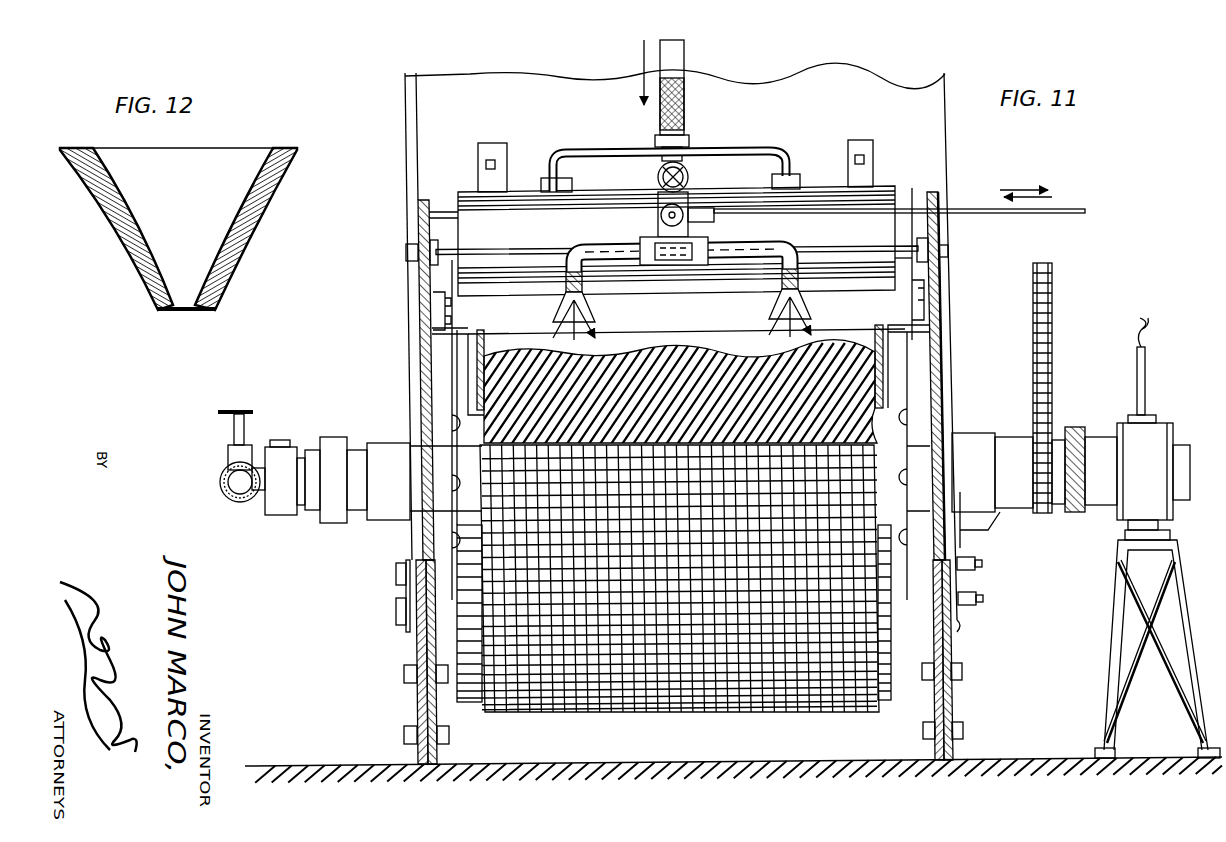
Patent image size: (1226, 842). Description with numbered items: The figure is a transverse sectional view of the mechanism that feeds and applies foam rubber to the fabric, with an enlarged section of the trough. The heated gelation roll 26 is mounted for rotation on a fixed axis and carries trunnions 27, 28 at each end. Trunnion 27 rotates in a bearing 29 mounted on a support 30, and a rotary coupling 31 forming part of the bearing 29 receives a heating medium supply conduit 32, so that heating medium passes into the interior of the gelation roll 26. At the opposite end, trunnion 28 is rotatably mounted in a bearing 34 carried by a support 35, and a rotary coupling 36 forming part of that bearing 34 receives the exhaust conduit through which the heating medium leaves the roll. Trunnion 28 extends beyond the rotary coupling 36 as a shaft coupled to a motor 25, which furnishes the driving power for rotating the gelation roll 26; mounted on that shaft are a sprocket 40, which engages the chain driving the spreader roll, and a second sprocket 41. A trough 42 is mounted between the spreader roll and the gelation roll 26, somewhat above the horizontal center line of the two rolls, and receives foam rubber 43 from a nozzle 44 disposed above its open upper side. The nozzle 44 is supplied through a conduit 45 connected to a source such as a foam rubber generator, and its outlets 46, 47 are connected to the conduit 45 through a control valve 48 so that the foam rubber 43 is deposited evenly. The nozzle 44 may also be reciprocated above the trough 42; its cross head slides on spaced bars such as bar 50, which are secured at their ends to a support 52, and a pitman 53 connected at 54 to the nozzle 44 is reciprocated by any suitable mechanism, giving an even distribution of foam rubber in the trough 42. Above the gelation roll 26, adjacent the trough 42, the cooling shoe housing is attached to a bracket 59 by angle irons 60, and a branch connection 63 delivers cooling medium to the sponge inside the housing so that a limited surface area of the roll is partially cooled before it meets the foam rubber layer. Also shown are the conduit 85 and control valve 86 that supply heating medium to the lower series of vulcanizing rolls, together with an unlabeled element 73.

In FIG. 11, the motor 25 is at (1150, 435).
In FIG. 11, the gelation roll 26 is at (870, 716).
In FIG. 11, the trunnion 27 is at (432, 535).
In FIG. 11, the trunnion 28 is at (965, 565).
In FIG. 11, the bearing 29 is at (392, 437).
In FIG. 11, the support 30 is at (417, 650).
In FIG. 11, the rotary coupling 31 is at (331, 437).
In FIG. 11, the heating medium supply conduit 32 is at (262, 512).
In FIG. 11, the bearing 34 is at (965, 435).
In FIG. 11, the support 35 is at (956, 693).
In FIG. 11, the rotary coupling 36 is at (1012, 508).
In FIG. 11, the sprocket 40 is at (1076, 515).
In FIG. 11, the second sprocket 41 is at (1050, 515).
In FIG. 12, the trough 42 is at (246, 198).
In FIG. 11, the trough 42 is at (476, 345).
In FIG. 11, the foam rubber 43 is at (722, 352).
In FIG. 11, the nozzle 44 is at (760, 248).
In FIG. 11, the conduit 45 is at (686, 100).
In FIG. 11, the outlet 46 is at (595, 313).
In FIG. 11, the outlet 47 is at (770, 311).
In FIG. 11, the control valve 48 is at (690, 172).
In FIG. 11, the bar 50 is at (845, 250).
In FIG. 11, the support 52 is at (427, 200).
In FIG. 11, the pitman 53 is at (985, 216).
In FIG. 11, the connection 54 is at (658, 216).
In FIG. 11, the bracket 59 is at (490, 135).
In FIG. 11, the angle irons 60 is at (508, 150).
In FIG. 11, the branch connection 63 is at (752, 152).
In FIG. 11, the chain 73 is at (1053, 348).
In FIG. 11, the conduit 85 is at (236, 498).
In FIG. 11, the control valve 86 is at (222, 476).